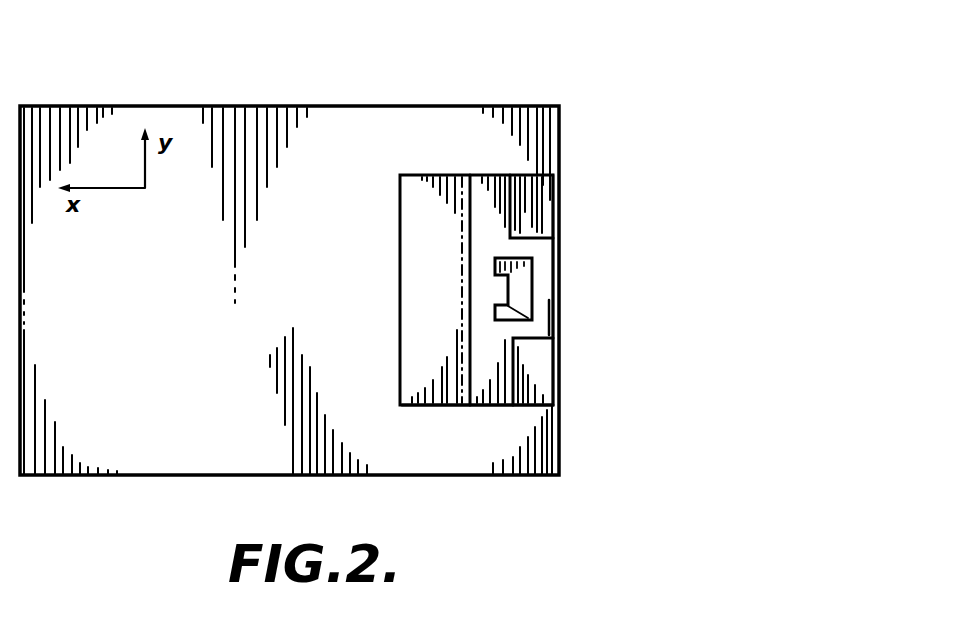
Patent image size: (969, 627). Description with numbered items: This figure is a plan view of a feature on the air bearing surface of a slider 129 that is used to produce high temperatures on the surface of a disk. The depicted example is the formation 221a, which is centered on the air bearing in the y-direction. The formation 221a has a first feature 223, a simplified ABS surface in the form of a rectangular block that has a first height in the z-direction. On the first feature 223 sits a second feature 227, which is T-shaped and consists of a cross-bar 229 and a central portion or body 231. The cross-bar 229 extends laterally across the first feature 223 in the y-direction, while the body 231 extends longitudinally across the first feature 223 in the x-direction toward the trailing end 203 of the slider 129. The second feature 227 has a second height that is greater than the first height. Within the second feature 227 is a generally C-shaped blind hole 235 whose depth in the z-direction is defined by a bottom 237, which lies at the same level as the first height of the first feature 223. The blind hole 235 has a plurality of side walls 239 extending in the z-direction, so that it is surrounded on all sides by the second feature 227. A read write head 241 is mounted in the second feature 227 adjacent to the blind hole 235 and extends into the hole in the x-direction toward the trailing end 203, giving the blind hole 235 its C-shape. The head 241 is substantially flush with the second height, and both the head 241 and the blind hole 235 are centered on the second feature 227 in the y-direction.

The slider 129 is at (566, 93).
The trailing end 203 is at (575, 445).
The formation 221a is at (384, 208).
The first feature 223 is at (418, 338).
The second feature 227 is at (487, 203).
The cross-bar 229 is at (468, 375).
The body 231 is at (538, 342).
The blind hole 235 is at (572, 319).
The bottom 237 is at (522, 257).
The side walls 239 is at (518, 314).
The read write head 241 is at (498, 293).